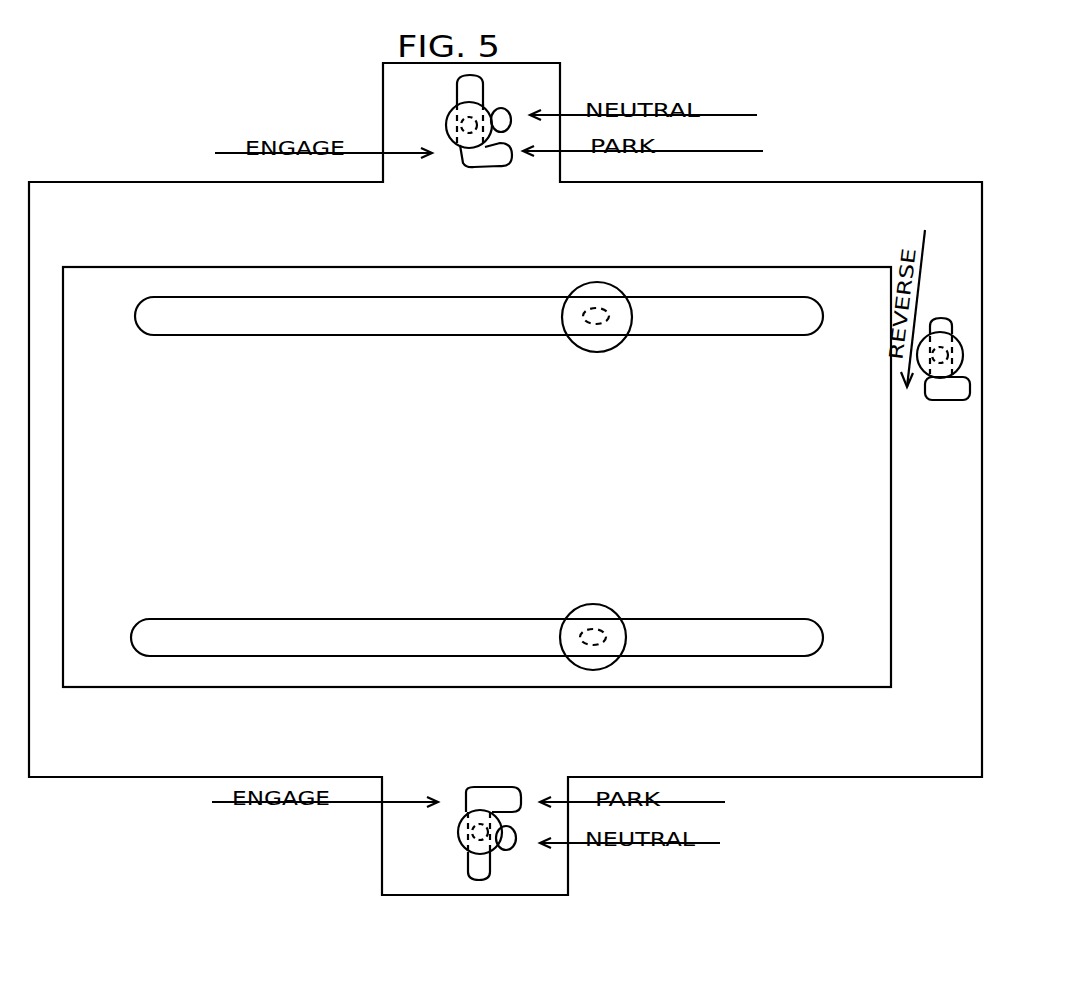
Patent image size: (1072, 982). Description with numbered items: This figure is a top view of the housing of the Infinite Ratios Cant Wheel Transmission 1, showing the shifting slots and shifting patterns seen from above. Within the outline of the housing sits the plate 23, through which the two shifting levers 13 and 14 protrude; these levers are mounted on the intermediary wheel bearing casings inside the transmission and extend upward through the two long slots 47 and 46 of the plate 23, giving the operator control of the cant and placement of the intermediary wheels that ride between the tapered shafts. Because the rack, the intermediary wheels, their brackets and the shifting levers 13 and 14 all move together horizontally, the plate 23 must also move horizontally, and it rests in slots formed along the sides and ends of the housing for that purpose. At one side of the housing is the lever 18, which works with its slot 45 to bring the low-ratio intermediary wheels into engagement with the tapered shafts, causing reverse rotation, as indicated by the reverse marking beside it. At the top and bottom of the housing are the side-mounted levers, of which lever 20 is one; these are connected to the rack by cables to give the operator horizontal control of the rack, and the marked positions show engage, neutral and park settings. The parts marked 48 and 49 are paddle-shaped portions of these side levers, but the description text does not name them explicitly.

The Infinite Ratios Cant Wheel Transmission 1 is at (1002, 240).
The shifting lever 13 is at (610, 620).
The shifting lever 14 is at (605, 342).
The lever 18 is at (950, 356).
The lever 20 is at (452, 112).
The plate 23 is at (868, 487).
The slot 45 is at (960, 388).
The slot 46 is at (237, 327).
The slot 47 is at (765, 632).
The lever paddle 48 is at (515, 797).
The lever paddle 49 is at (462, 160).